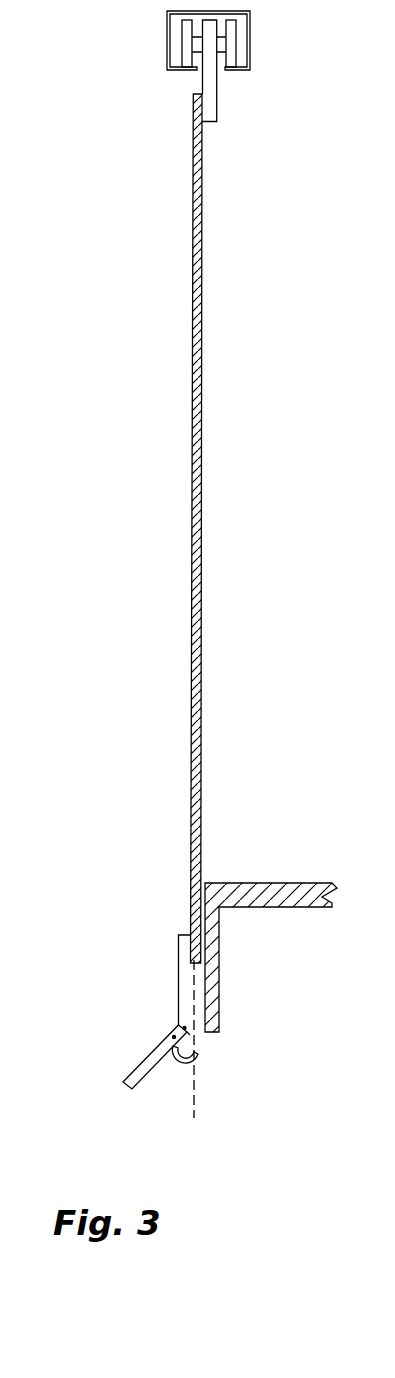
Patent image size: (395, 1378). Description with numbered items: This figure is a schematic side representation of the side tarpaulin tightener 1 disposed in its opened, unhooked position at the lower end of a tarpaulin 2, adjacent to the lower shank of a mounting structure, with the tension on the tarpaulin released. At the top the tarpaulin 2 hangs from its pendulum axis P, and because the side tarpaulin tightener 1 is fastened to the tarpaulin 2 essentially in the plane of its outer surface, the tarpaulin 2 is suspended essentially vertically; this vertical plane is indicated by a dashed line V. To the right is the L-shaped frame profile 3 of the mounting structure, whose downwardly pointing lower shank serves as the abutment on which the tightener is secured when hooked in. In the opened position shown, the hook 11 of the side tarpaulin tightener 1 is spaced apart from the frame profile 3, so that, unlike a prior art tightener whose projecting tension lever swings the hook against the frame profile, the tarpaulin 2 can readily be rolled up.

The pendulum axis P is at (201, 123).
The tarpaulin 2 is at (206, 483).
The frame profile 3 is at (312, 878).
The side tarpaulin tightener 1 is at (137, 973).
The hook 11 is at (200, 1067).
The vertical plane V is at (193, 1120).